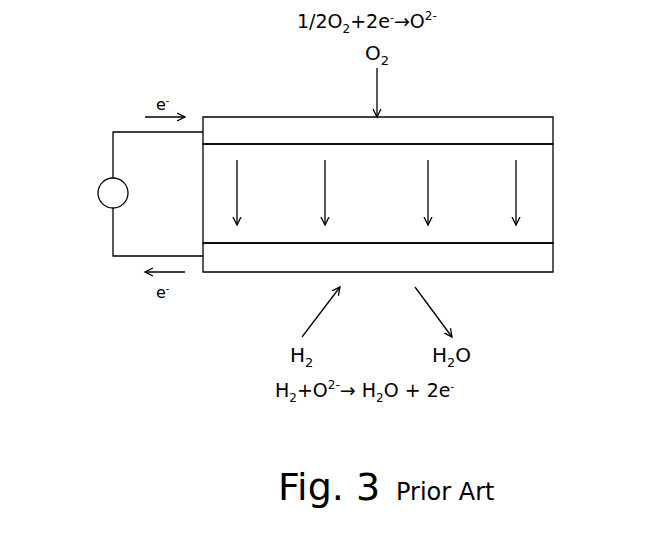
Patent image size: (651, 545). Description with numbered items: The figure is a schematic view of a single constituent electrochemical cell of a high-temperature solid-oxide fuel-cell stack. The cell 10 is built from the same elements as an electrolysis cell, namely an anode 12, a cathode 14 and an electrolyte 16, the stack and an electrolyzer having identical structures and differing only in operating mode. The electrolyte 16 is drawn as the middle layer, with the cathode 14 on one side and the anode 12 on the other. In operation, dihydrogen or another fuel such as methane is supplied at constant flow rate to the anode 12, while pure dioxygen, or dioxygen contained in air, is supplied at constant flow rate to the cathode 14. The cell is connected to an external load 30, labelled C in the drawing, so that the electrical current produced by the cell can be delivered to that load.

The solid oxide fuel cell system 10 is at (196, 64).
The anode 12 is at (542, 258).
The cathode 14 is at (542, 132).
The electrolyte 16 is at (542, 190).
The external load / circuit 30 is at (97, 190).